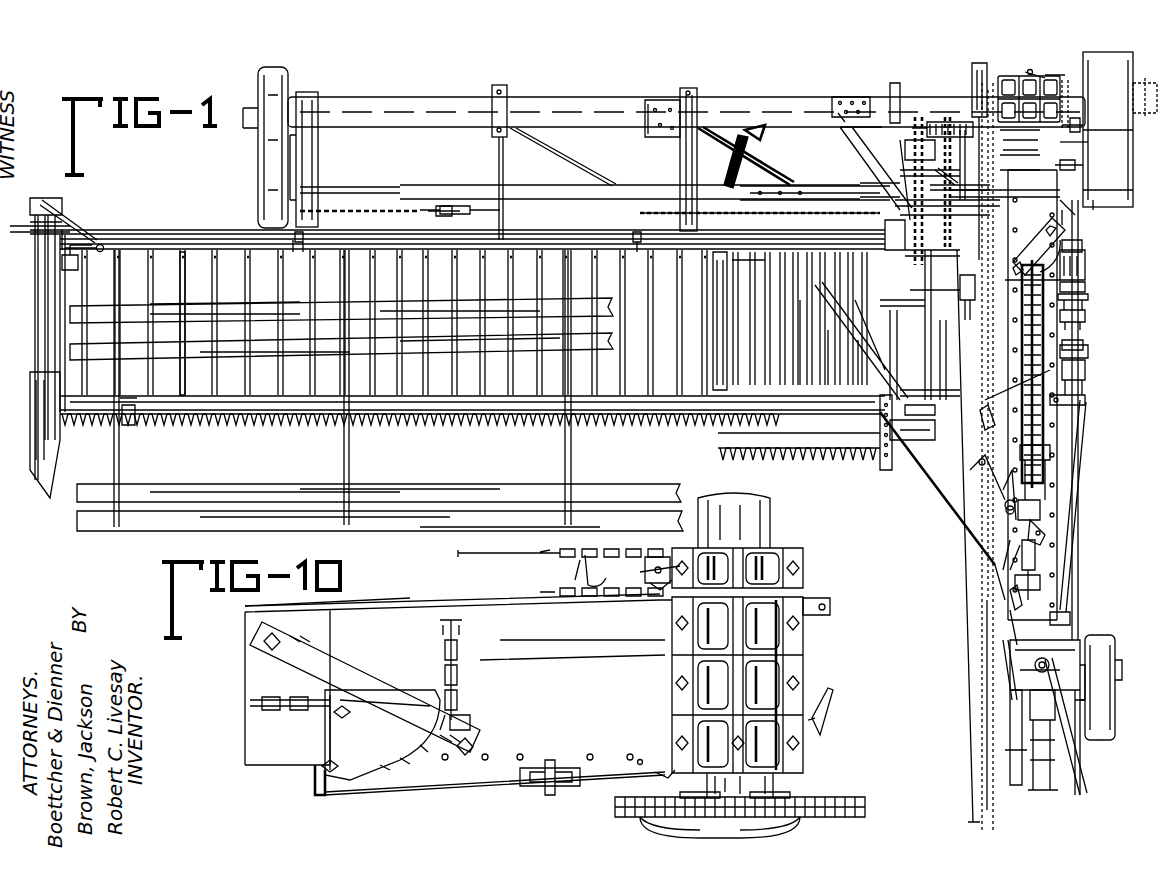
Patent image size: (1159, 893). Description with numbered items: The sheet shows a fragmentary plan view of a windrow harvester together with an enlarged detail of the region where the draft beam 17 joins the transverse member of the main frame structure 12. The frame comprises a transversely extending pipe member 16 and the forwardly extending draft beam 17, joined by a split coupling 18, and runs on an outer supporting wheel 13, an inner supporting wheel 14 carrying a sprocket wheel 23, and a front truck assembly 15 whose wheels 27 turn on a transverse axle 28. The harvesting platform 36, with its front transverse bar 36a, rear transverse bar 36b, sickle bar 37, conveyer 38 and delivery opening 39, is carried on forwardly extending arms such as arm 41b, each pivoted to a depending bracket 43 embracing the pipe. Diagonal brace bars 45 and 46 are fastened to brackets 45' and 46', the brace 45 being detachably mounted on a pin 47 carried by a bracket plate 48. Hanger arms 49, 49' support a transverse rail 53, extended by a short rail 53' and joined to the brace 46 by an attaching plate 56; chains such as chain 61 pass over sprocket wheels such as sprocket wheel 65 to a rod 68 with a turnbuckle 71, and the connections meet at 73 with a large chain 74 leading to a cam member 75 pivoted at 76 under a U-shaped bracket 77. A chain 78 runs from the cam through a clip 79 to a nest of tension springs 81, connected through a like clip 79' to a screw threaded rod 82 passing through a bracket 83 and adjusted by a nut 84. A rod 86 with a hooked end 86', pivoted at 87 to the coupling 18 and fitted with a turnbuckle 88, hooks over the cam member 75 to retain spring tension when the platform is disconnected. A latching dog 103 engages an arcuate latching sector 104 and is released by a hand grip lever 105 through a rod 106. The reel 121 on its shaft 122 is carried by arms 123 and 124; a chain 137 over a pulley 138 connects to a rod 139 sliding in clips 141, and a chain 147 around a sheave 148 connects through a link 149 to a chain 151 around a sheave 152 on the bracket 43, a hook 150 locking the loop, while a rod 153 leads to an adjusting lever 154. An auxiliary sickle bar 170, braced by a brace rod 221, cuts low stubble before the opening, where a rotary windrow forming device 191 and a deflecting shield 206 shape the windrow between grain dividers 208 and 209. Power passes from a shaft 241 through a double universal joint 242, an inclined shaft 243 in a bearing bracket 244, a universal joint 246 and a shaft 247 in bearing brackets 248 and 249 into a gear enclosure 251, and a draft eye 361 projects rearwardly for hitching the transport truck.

In FIG. 1, the main frame structure 12 is at (922, 100).
In FIG. 1, the outer supporting wheel 13 is at (266, 157).
In FIG. 1, the inner supporting wheel 14 is at (1072, 198).
In FIG. 1, the front truck assembly 15 is at (1118, 672).
In FIG. 1, the transversely extending frame member 16 is at (405, 118).
In FIG. 1, the draft beam 17 is at (1012, 600).
In FIG. 1, the split coupling 18 is at (1045, 65).
In FIG. 10, the split coupling 18 is at (812, 718).
In FIG. 1, the sprocket wheel 23 is at (1098, 95).
In FIG. 1, the wheels 27 is at (1015, 725).
In FIG. 1, the transverse axle 28 is at (1003, 672).
In FIG. 1, the harvesting platform 36 is at (1007, 80).
In FIG. 1, the front transverse bar 36a is at (200, 430).
In FIG. 1, the rear transverse bar 36b is at (210, 247).
In FIG. 1, the sickle bar 37 is at (445, 428).
In FIG. 1, the conveyer 38 is at (650, 340).
In FIG. 1, the delivery opening 39 is at (723, 334).
In FIG. 1, the forwardly extending arm 41b is at (497, 150).
In FIG. 1, the depending bracket 43 is at (972, 92).
In FIG. 10, the depending bracket 43 is at (770, 568).
In FIG. 1, the diagonal brace bar 45 is at (875, 168).
In FIG. 1, the bracket 45' is at (851, 94).
In FIG. 1, the diagonal brace bar 46 is at (725, 161).
In FIG. 1, the bracket 46' is at (672, 152).
In FIG. 1, the pin 47 is at (1005, 525).
In FIG. 1, the bracket plate 48 is at (1045, 535).
In FIG. 1, the hanger arm 49 is at (322, 159).
In FIG. 1, the hanger arm 49' is at (662, 129).
In FIG. 1, the supporting bar 53 is at (590, 186).
In FIG. 1, the short rail 53' is at (869, 176).
In FIG. 1, the attaching plate 56 is at (815, 180).
In FIG. 1, the chain 61 is at (346, 211).
In FIG. 1, the sprocket wheel 65 is at (760, 274).
In FIG. 1, the rod 68 is at (425, 212).
In FIG. 1, the adjustable turnbuckle 71 is at (443, 200).
In FIG. 1, the operative connection 73 is at (975, 185).
In FIG. 10, the large chain 74 is at (462, 668).
In FIG. 1, the cam member 75 is at (1068, 238).
In FIG. 10, the cam member 75 is at (382, 740).
In FIG. 1, the pivot 76 is at (1060, 270).
In FIG. 10, the pivot 76 is at (345, 682).
In FIG. 1, the U-shaped bracket 77 is at (1085, 286).
In FIG. 10, the U-shaped bracket 77 is at (468, 710).
In FIG. 1, the chain 78 is at (1088, 297).
In FIG. 1, the connecting clip 79 is at (1087, 420).
In FIG. 1, the clip 79' is at (1063, 472).
In FIG. 1, the nest of parallel tension springs 81 is at (1095, 370).
In FIG. 1, the screw threaded rod 82 is at (1040, 510).
In FIG. 1, the bracket 83 is at (1035, 552).
In FIG. 1, the nut 84 is at (1040, 580).
In FIG. 1, the rod 86 is at (1087, 144).
In FIG. 10, the rod 86 is at (495, 794).
In FIG. 1, the hooked forward end 86' is at (1094, 259).
In FIG. 10, the hooked forward end 86' is at (307, 795).
In FIG. 1, the pivotal connection 87 is at (1095, 128).
In FIG. 10, the pivotal connection 87 is at (665, 768).
In FIG. 1, the turnbuckle 88 is at (1083, 162).
In FIG. 10, the turnbuckle 88 is at (540, 790).
In FIG. 1, the latching dog 103 is at (983, 475).
In FIG. 1, the arcuate latching sector 104 is at (980, 445).
In FIG. 1, the hand grip releasing lever 105 is at (970, 762).
In FIG. 1, the rod 106 is at (990, 630).
In FIG. 1, the reel 121 is at (236, 525).
In FIG. 1, the supporting shaft 122 is at (110, 428).
In FIG. 1, the forwardly extending arm 123 is at (52, 345).
In FIG. 1, the forwardly extending arm 124 is at (880, 455).
In FIG. 1, the chain 137 is at (102, 245).
In FIG. 1, the pulley 138 is at (78, 262).
In FIG. 1, the rod 139 is at (198, 268).
In FIG. 1, the clips 141 is at (637, 265).
In FIG. 1, the chain 147 is at (958, 285).
In FIG. 1, the sheave 148 is at (962, 305).
In FIG. 1, the link 149 is at (1010, 185).
In FIG. 10, the link 149 is at (520, 557).
In FIG. 1, the hook 150 is at (1025, 158).
In FIG. 10, the hook 150 is at (600, 600).
In FIG. 1, the chain 151 is at (1030, 140).
In FIG. 10, the chain 151 is at (640, 605).
In FIG. 1, the sheave 152 is at (985, 150).
In FIG. 10, the sheave 152 is at (655, 540).
In FIG. 1, the rod 153 is at (1005, 560).
In FIG. 10, the rod 153 is at (408, 598).
In FIG. 1, the adjusting lever 154 is at (1025, 765).
In FIG. 1, the auxiliary sickle bar 170 is at (746, 465).
In FIG. 1, the rotary windrow forming device 191 is at (832, 282).
In FIG. 1, the deflecting shield 206 is at (770, 128).
In FIG. 1, the grain divider 208 is at (38, 472).
In FIG. 1, the grain divider 209 is at (890, 445).
In FIG. 1, the brace rod 221 is at (965, 527).
In FIG. 1, the shaft 241 is at (1082, 778).
In FIG. 1, the double universal joint 242 is at (1080, 660).
In FIG. 1, the shaft 243 is at (1066, 600).
In FIG. 1, the bearing bracket 244 is at (1070, 618).
In FIG. 1, the universal joint 246 is at (1075, 440).
In FIG. 1, the shaft 247 is at (1088, 352).
In FIG. 1, the bearing bracket 248 is at (1085, 400).
In FIG. 1, the bearing bracket 249 is at (1085, 316).
In FIG. 1, the gear enclosure 251 is at (1082, 245).
In FIG. 10, the draft eye 361 is at (826, 605).